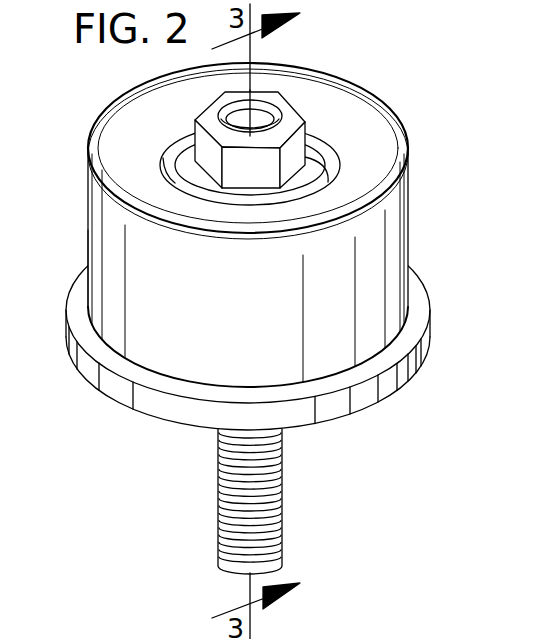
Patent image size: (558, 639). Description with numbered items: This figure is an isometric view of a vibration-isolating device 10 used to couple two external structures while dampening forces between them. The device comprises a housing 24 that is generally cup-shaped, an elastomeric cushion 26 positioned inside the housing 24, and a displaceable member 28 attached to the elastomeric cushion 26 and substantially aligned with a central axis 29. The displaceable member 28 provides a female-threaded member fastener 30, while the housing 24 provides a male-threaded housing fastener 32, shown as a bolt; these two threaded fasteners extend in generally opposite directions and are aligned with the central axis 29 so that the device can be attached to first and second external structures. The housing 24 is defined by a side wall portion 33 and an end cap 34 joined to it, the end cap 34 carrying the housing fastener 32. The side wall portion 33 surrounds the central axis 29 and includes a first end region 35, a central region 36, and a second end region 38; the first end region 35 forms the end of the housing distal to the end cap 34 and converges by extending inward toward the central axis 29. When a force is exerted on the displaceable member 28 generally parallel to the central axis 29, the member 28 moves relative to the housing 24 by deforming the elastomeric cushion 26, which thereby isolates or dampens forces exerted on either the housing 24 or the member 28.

The vibration-isolating device 10 is at (86, 114).
The housing 24 is at (77, 255).
The elastomeric cushion 26 is at (177, 173).
The displaceable member 28 is at (202, 144).
The central axis 29 is at (258, 98).
The member fastener 30 is at (268, 110).
The housing fastener 32 is at (228, 505).
The side wall portion 33 is at (418, 249).
The end cap 34 is at (145, 420).
The first end region 35 is at (377, 140).
The central region 36 is at (398, 232).
The second end region 38 is at (407, 372).